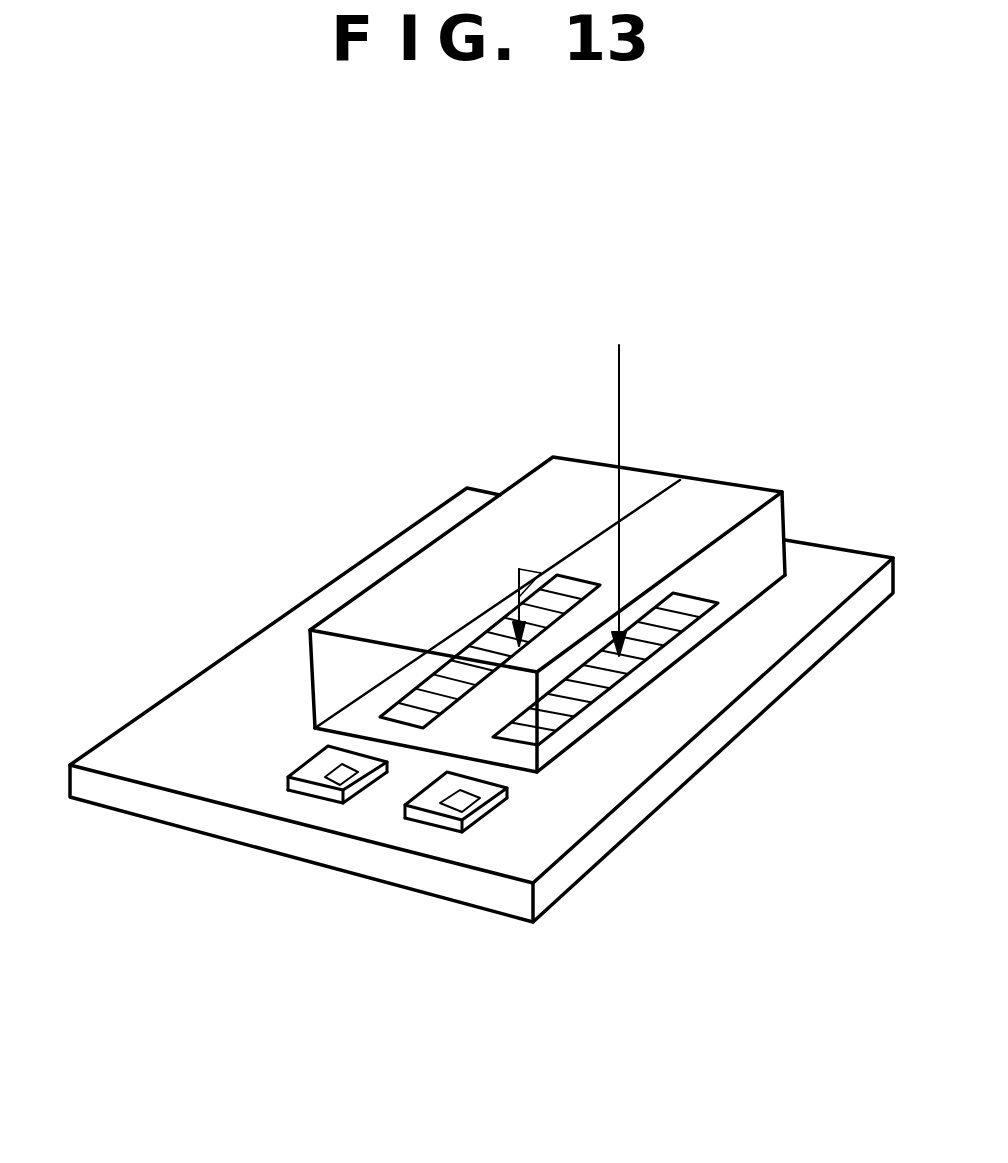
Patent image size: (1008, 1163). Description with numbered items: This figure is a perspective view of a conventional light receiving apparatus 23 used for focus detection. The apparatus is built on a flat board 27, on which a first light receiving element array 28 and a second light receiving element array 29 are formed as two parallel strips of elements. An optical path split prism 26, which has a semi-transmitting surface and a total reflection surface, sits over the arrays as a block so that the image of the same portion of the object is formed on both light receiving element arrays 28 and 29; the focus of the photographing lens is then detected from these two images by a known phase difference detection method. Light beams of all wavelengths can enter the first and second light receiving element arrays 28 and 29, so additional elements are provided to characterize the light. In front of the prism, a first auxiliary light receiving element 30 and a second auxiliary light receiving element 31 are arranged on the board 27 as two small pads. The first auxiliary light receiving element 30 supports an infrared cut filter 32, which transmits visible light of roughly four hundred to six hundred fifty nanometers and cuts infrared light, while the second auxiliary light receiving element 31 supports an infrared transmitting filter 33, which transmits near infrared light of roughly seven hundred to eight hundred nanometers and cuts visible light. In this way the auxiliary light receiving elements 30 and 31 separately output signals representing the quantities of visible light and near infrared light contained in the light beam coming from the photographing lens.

The light receiving apparatus 23 is at (346, 538).
The optical path split prism 26 is at (745, 482).
The board 27 is at (620, 828).
The first light receiving element array 28 is at (585, 693).
The second light receiving element array 29 is at (397, 703).
The first auxiliary light receiving element 30 is at (457, 803).
The second auxiliary light receiving element 31 is at (337, 778).
The infrared cut filter 32 is at (420, 815).
The infrared transmitting filter 33 is at (288, 770).